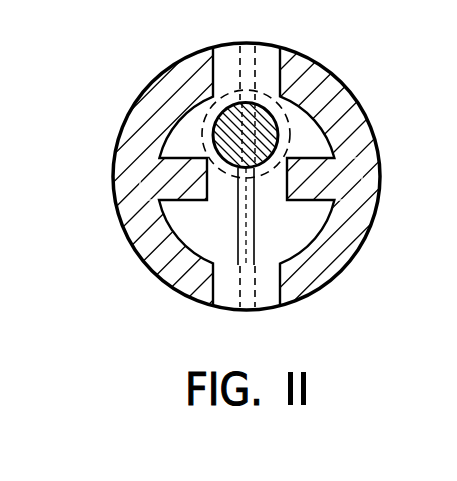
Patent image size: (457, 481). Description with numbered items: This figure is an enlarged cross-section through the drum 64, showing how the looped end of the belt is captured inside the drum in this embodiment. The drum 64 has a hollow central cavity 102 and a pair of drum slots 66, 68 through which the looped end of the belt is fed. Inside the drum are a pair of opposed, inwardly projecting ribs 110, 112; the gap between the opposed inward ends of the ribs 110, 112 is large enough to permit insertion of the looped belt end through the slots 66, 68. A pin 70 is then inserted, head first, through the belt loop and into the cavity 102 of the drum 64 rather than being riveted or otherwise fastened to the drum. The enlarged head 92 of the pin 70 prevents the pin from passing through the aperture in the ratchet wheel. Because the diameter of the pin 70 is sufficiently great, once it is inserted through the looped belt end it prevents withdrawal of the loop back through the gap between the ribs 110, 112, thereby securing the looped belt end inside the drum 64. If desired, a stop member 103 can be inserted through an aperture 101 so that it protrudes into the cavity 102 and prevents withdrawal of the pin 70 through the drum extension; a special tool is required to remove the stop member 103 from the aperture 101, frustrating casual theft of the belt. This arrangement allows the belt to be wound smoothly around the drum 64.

The drum 64 is at (130, 257).
The slot 66 is at (231, 297).
The slot 68 is at (268, 58).
The pin 70 is at (213, 128).
The enlarged head 92 is at (291, 136).
The aperture 101 is at (236, 68).
The hollow central cavity 102 is at (283, 233).
The stop member 103 is at (238, 198).
The rib 110 is at (321, 203).
The rib 112 is at (166, 152).